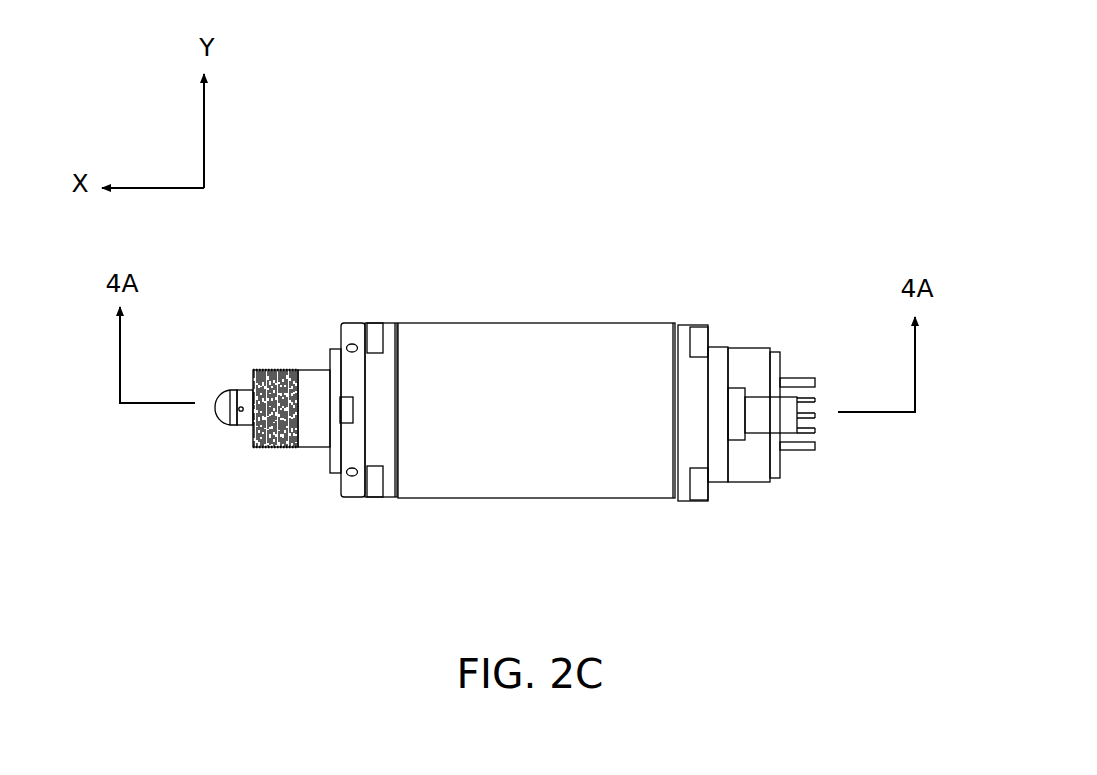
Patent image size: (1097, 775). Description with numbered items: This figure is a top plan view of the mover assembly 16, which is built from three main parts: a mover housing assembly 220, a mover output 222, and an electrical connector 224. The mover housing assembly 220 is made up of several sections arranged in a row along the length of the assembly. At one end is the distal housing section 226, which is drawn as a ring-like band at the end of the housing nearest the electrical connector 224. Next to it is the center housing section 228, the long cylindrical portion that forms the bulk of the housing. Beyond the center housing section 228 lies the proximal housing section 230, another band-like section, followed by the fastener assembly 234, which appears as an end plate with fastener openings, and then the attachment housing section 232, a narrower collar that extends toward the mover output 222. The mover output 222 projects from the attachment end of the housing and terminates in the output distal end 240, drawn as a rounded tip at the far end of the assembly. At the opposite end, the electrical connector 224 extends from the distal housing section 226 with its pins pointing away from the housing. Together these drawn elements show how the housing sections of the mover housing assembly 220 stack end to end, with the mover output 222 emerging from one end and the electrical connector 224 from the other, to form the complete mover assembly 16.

The mover assembly 16 is at (648, 301).
The mover housing assembly 220 is at (571, 320).
The mover output 222 is at (241, 419).
The electrical connector 224 is at (777, 365).
The distal housing section 226 is at (683, 341).
The center housing section 228 is at (465, 346).
The proximal housing section 230 is at (392, 326).
The attachment housing section 232 is at (313, 390).
The fastener assembly 234 is at (376, 323).
The output distal end 240 is at (218, 407).